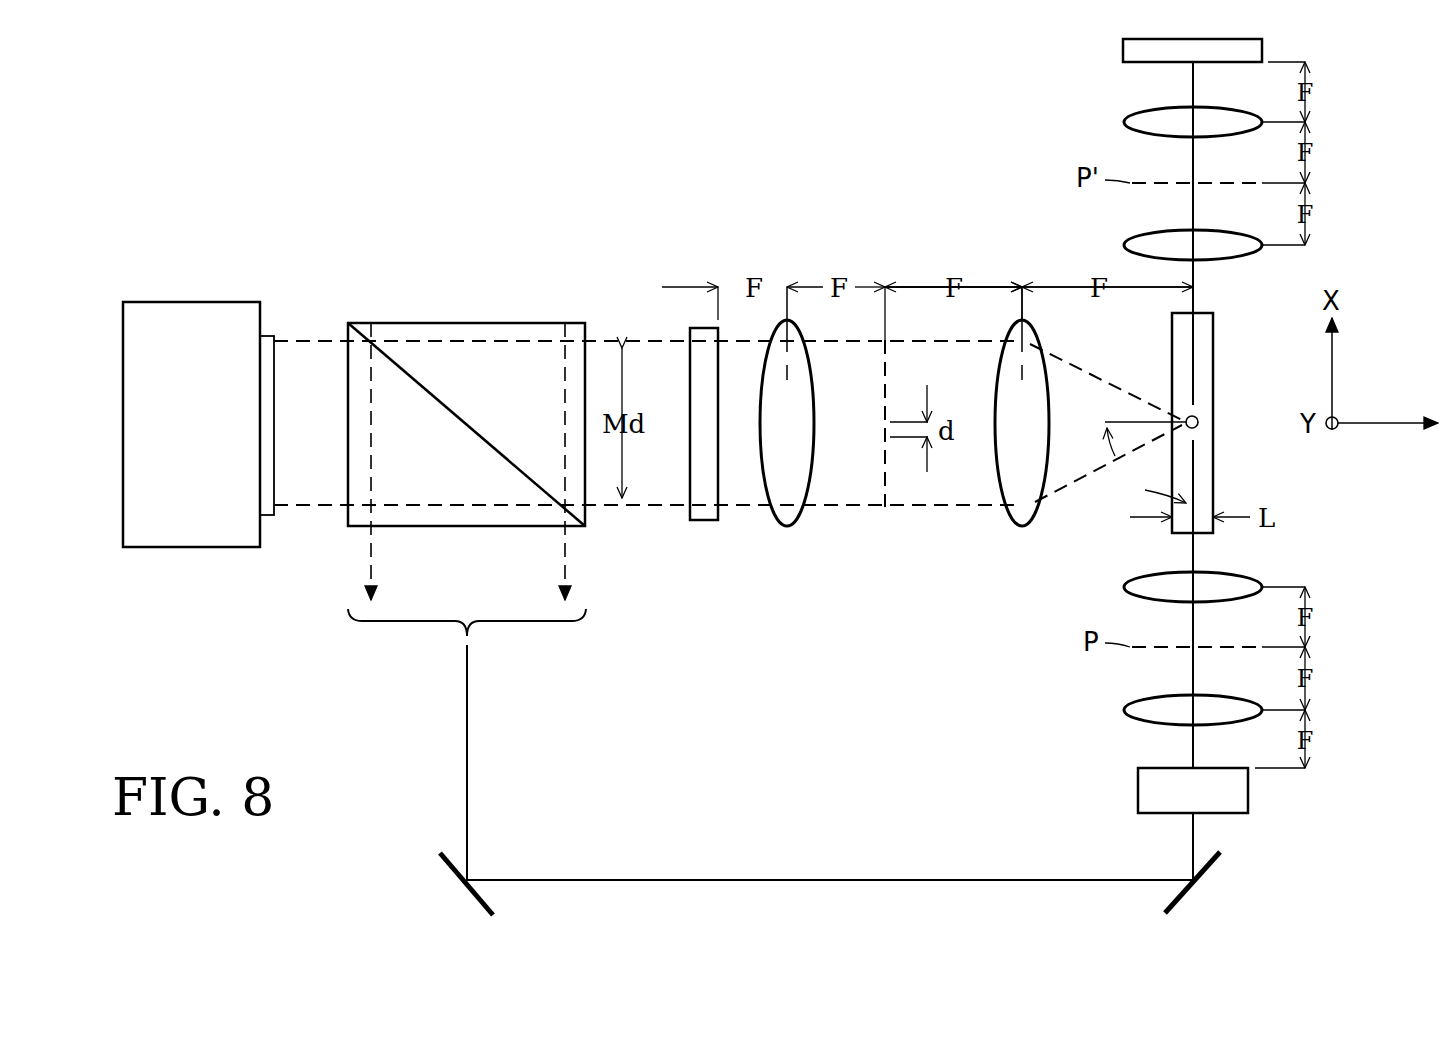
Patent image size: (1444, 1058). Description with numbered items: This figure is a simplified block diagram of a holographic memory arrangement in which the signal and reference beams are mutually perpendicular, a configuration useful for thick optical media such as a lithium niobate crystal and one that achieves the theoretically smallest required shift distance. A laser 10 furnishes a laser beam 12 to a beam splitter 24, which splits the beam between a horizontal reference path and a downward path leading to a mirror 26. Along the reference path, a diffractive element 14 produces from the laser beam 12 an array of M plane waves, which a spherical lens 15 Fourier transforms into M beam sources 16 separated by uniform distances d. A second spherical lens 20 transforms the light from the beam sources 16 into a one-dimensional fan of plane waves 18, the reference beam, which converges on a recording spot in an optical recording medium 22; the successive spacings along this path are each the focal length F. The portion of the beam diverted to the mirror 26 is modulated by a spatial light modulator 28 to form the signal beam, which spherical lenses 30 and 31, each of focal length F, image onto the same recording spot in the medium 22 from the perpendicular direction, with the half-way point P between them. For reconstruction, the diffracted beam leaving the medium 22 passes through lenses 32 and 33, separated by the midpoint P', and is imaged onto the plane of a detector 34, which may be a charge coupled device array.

The laser 10 is at (192, 312).
The laser beam 12 is at (310, 338).
The diffractive element 14 is at (690, 522).
The spherical lens 15 is at (795, 520).
The beam sources 16 is at (888, 480).
The fan of plane waves 18 is at (1118, 384).
The spherical lens 20 is at (1020, 528).
The optical recording medium 22 is at (1214, 347).
The beam splitter 24 is at (422, 321).
The mirror 26 is at (443, 859).
The spatial light modulator 28 is at (1138, 790).
The spherical lens 30 is at (1125, 710).
The spherical lens 31 is at (1125, 587).
The lens 32 is at (1125, 122).
The lens 33 is at (1125, 245).
The detector 34 is at (1125, 50).